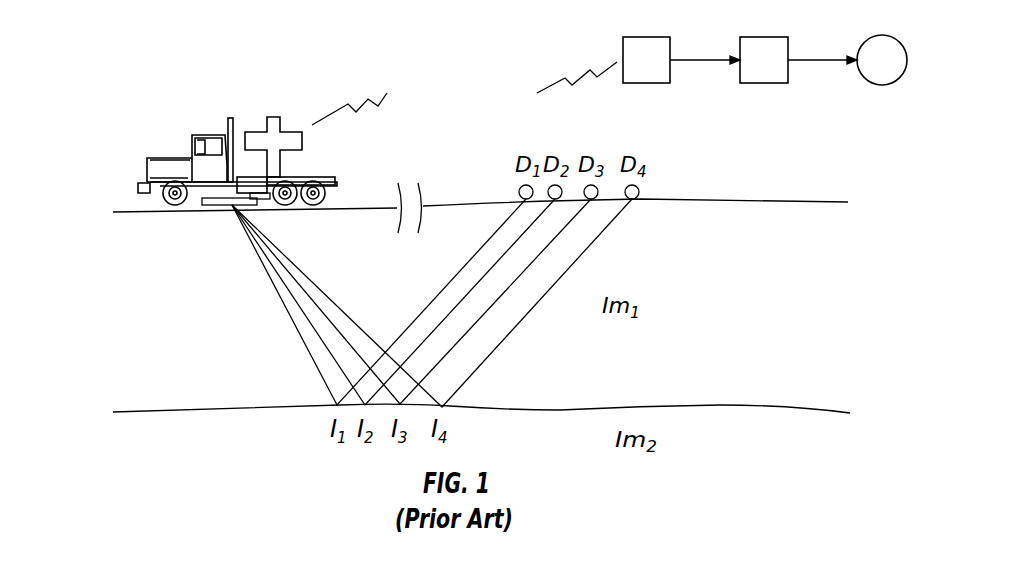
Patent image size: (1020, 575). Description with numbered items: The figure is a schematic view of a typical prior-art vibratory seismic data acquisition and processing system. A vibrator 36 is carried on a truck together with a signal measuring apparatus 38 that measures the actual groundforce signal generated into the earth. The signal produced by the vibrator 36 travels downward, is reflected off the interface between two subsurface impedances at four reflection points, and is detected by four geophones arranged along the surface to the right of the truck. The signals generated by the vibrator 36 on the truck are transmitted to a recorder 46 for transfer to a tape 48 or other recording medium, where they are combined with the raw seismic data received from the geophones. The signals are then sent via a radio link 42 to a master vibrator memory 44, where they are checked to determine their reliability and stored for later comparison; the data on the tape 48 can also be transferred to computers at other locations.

The vibrator 36 is at (218, 203).
The signal measuring apparatus 38 is at (260, 203).
The radio link 42 is at (267, 115).
The master vibrator memory 44 is at (880, 37).
The recorder 46 is at (647, 37).
The tape 48 is at (763, 37).